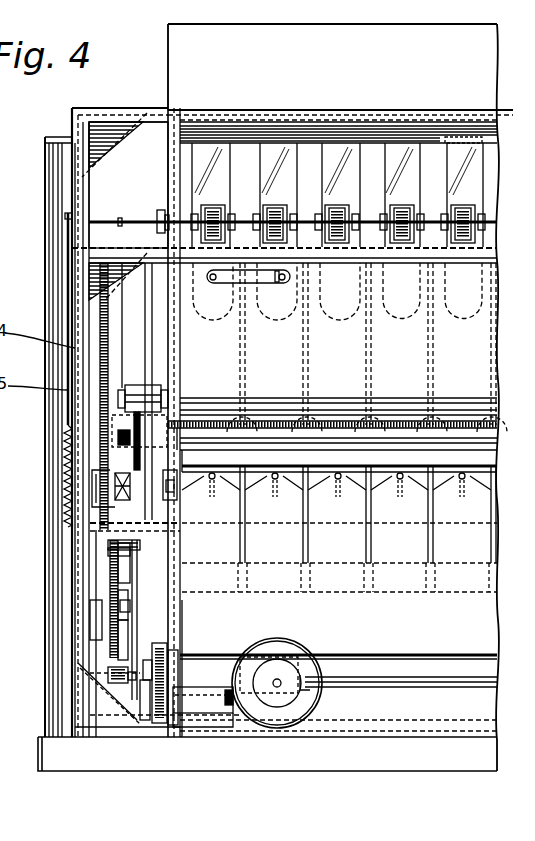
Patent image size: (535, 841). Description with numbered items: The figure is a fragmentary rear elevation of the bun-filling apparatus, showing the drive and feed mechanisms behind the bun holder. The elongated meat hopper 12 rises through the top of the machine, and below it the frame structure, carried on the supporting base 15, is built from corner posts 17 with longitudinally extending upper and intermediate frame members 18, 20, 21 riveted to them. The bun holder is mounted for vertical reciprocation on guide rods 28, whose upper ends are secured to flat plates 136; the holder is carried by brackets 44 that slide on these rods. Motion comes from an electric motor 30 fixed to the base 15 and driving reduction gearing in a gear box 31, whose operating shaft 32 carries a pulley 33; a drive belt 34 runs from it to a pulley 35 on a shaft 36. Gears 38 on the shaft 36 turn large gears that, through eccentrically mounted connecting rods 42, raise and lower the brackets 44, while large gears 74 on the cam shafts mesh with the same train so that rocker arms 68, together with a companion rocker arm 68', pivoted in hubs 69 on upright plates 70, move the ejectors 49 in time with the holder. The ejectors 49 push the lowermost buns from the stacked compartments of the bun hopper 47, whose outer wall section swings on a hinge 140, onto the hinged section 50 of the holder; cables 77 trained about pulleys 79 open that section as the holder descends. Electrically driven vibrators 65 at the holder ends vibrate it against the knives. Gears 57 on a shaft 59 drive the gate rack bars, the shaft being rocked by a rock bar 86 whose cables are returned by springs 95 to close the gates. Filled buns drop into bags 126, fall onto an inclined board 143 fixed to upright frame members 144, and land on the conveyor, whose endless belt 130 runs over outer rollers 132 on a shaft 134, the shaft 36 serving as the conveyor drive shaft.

The meat hopper 12 is at (168, 80).
The supporting base 15 is at (160, 763).
The corner posts 17 is at (80, 160).
The upper frame member 18 is at (96, 112).
The intermediate frame member 20 is at (424, 729).
The intermediate frame member 21 is at (330, 528).
The guide rods 28 is at (103, 353).
The electric motor 30 is at (288, 710).
The gear box 31 is at (200, 710).
The operating shaft 32 is at (228, 698).
The pulley 33 is at (147, 713).
The drive belt 34 is at (165, 675).
The pulley 35 is at (147, 647).
The shaft 36 is at (160, 667).
The gears 38 is at (118, 687).
The connecting rods 42 is at (100, 523).
The brackets 44 is at (93, 490).
The bun hopper 47 is at (292, 383).
The ejectors 49 is at (187, 320).
The hinged section 50 is at (313, 430).
The gears 57 is at (272, 207).
The shaft 59 is at (112, 222).
The electrically driven vibrators 65 is at (140, 398).
The rocker arms 68 is at (83, 502).
The pinion 68' is at (142, 611).
The hubs 69 is at (128, 553).
The upright plates 70 is at (103, 630).
The large gears 74 is at (113, 580).
The cables 77 is at (123, 367).
The pulleys 79 is at (130, 480).
The rock bar 86 is at (66, 215).
The springs 95 is at (67, 470).
The bags 126 is at (278, 543).
The endless belt 130 is at (385, 677).
The outer rollers 132 is at (37, 437).
The shaft 134 is at (2, 675).
The flat plates 136 is at (124, 252).
The hinge 140 is at (442, 413).
The inclined board 143 is at (398, 622).
The upright frame members 144 is at (180, 597).